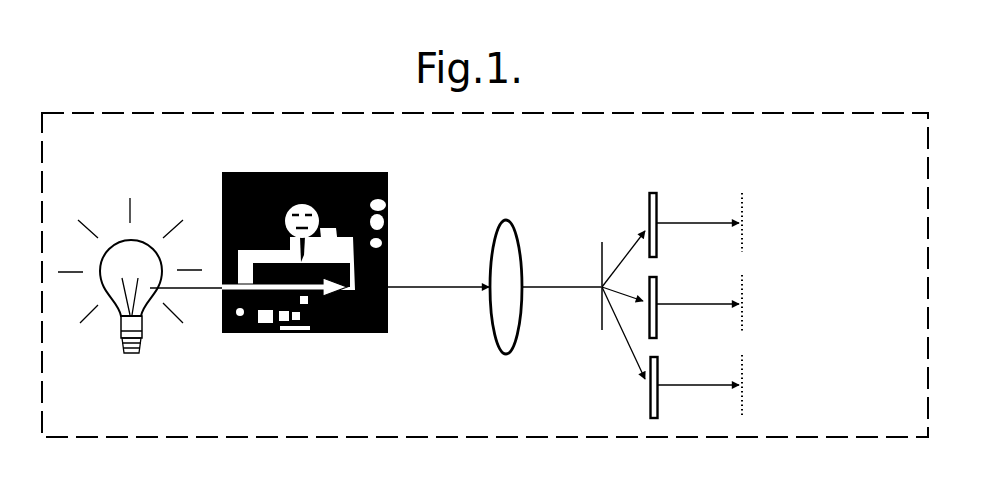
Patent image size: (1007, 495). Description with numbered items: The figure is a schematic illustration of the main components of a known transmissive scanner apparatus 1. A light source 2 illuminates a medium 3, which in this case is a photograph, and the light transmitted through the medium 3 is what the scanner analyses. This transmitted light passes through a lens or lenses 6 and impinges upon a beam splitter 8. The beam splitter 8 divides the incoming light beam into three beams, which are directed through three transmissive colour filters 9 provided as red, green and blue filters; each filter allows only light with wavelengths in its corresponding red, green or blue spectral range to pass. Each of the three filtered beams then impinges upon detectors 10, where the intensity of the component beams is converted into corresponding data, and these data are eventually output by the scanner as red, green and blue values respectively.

The scanner apparatus 1 is at (86, 113).
The light source 2 is at (122, 241).
The medium 3 is at (250, 172).
The lens or lenses 6 is at (497, 233).
The beam splitter 8 is at (597, 258).
The transmissive colour filters 9 is at (657, 238).
The detectors 10 is at (742, 202).